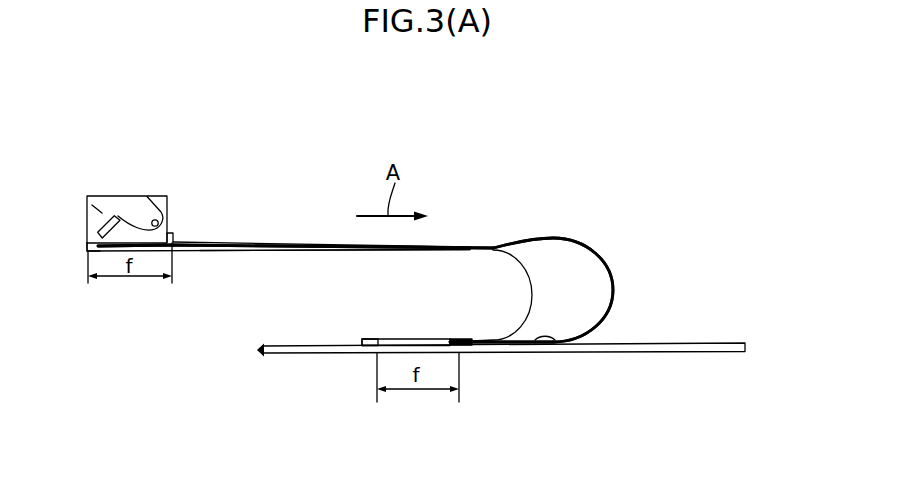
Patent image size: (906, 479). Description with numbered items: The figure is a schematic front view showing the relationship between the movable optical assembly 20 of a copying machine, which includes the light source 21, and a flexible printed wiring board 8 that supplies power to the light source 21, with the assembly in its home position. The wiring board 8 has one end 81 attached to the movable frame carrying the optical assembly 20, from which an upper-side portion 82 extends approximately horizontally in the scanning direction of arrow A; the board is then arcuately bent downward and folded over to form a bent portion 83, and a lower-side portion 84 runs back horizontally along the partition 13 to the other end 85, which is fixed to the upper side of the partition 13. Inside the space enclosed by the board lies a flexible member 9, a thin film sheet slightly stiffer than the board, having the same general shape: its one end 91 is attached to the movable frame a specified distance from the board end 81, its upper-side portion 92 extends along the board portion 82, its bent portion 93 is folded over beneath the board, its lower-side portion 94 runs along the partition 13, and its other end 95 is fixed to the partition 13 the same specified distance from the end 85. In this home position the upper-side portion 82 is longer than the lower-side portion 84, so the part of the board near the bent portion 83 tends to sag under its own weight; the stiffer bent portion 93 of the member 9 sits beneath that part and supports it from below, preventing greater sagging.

The flexible printed wiring board 8 is at (585, 231).
The one end of the wiring board 81 is at (153, 212).
The upper-side portion of the wiring board 82 is at (260, 242).
The bent portion of the wiring board 83 is at (610, 268).
The lower-side portion of the wiring board 84 is at (527, 345).
The other end of the wiring board 85 is at (470, 347).
The flexible member 9 is at (206, 259).
The one end of the flexible member 91 is at (86, 252).
The upper-side portion of the flexible member 92 is at (277, 252).
The bent portion of the flexible member 93 is at (533, 289).
The lower-side portion of the flexible member 94 is at (435, 338).
The other end of the flexible member 95 is at (365, 338).
The partition 13 is at (673, 343).
The movable optical assembly 20 is at (114, 191).
The light source 21 is at (153, 220).